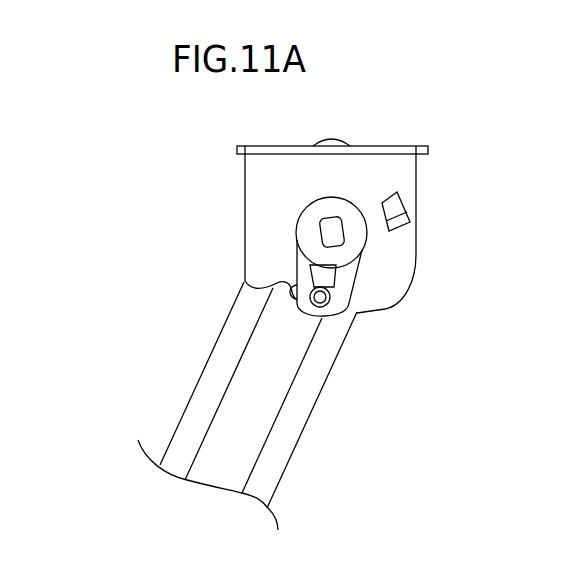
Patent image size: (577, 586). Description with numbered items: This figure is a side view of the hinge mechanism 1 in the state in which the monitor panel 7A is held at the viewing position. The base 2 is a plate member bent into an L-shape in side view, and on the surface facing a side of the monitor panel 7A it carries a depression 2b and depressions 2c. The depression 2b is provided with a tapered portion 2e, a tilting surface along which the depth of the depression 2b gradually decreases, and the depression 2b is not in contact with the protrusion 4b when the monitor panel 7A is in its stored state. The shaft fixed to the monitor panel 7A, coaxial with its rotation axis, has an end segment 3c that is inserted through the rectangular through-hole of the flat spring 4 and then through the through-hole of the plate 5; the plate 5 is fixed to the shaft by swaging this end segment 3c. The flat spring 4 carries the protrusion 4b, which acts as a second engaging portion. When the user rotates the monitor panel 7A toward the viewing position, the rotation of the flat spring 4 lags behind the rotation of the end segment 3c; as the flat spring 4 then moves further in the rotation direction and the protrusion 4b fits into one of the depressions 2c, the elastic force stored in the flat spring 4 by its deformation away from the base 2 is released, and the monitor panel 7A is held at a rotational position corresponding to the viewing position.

The hinge mechanism 1 is at (408, 312).
The base 2 is at (273, 230).
The depression 2b is at (395, 209).
The depressions 2c is at (281, 282).
The tapered portion 2e is at (409, 222).
The end segment 3c is at (327, 235).
The flat spring 4 is at (337, 267).
The protrusion 4b is at (320, 297).
The plate 5 is at (313, 216).
The monitor panel 7A is at (298, 436).